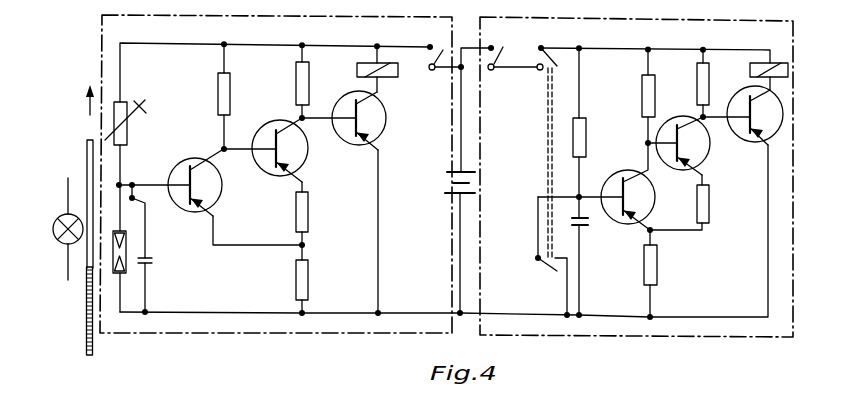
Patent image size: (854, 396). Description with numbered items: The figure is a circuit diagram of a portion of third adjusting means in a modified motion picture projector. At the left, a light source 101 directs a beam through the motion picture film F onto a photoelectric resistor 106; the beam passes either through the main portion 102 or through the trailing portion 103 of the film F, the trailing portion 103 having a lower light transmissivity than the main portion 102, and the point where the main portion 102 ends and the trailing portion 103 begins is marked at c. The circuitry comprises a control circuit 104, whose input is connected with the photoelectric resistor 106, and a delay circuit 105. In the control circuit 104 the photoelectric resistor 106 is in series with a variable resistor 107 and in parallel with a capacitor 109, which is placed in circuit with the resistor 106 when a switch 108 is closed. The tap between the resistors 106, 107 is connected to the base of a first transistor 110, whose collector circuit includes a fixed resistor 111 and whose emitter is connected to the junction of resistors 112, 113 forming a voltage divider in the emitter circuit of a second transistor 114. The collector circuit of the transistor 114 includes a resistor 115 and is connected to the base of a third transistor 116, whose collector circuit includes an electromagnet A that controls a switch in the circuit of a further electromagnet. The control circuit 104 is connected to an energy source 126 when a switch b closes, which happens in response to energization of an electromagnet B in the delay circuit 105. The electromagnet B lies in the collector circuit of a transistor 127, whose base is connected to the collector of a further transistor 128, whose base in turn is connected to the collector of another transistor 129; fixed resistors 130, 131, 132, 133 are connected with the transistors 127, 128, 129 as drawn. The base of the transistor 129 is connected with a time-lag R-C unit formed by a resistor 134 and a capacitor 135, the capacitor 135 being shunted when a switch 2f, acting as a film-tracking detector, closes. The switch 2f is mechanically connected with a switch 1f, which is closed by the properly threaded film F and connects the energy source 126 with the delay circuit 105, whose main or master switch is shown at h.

The light source 101 is at (67, 259).
The main portion of motion picture film 102 is at (87, 170).
The trailing portion of motion picture film 103 is at (91, 343).
The control circuit 104 is at (340, 41).
The delay circuit 105 is at (677, 46).
The photoelectric resistor 106 is at (127, 248).
The variable resistor 107 is at (121, 100).
The switch 108 is at (144, 200).
The capacitor 109 is at (152, 264).
The first transistor 110 is at (196, 213).
The fixed resistor 111 is at (216, 74).
The resistor of voltage divider 112 is at (309, 211).
The resistor of voltage divider 113 is at (309, 276).
The second transistor 114 is at (257, 177).
The resistor 115 is at (297, 86).
The third transistor 116 is at (387, 107).
The energy source 126 is at (447, 177).
The transistor 127 is at (748, 142).
The further transistor 128 is at (672, 172).
The transistor 129 is at (628, 169).
The fixed resistor 130 is at (642, 101).
The fixed resistor 131 is at (696, 82).
The fixed resistor 132 is at (709, 202).
The fixed resistor 133 is at (658, 261).
The resistor 134 is at (573, 140).
The capacitor 135 is at (582, 224).
The electromagnet A is at (367, 67).
The electromagnet B is at (760, 74).
The switch b is at (432, 46).
The main or master switch h is at (515, 46).
The switch 1f is at (541, 56).
The switch 2f is at (550, 268).
The point C is at (87, 265).
The motion picture film F is at (80, 338).